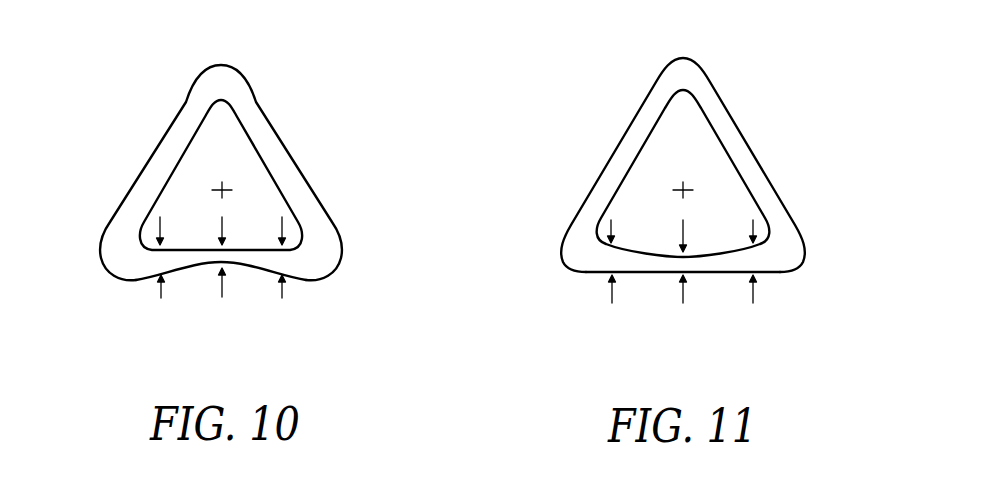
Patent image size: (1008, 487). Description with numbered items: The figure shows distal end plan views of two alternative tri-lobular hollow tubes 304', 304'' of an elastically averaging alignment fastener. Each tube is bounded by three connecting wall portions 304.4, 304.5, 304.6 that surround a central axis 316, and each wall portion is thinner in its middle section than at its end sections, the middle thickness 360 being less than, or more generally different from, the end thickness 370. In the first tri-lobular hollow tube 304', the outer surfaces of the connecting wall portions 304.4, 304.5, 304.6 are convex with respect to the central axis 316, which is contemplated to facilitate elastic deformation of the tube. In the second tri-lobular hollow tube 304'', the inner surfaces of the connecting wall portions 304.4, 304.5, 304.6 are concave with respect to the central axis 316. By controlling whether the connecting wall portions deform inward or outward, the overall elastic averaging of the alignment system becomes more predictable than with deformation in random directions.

In FIG. 10, the tri-lobular hollow tube 304' is at (222, 197).
In FIG. 11, the tri-lobular hollow tube 304'' is at (685, 199).
In FIG. 10, the connecting wall portion 304.4 is at (158, 175).
In FIG. 11, the connecting wall portion 304.4 is at (605, 162).
In FIG. 10, the connecting wall portion 304.5 is at (290, 173).
In FIG. 11, the connecting wall portion 304.5 is at (760, 157).
In FIG. 10, the connecting wall portion 304.6 is at (197, 263).
In FIG. 11, the connecting wall portion 304.6 is at (645, 272).
In FIG. 10, the central axis 316 is at (222, 190).
In FIG. 11, the central axis 316 is at (683, 190).
In FIG. 10, the thickness 360 is at (242, 323).
In FIG. 11, the thickness 360 is at (693, 331).
In FIG. 10, the thickness 370 is at (180, 323).
In FIG. 11, the thickness 370 is at (630, 331).